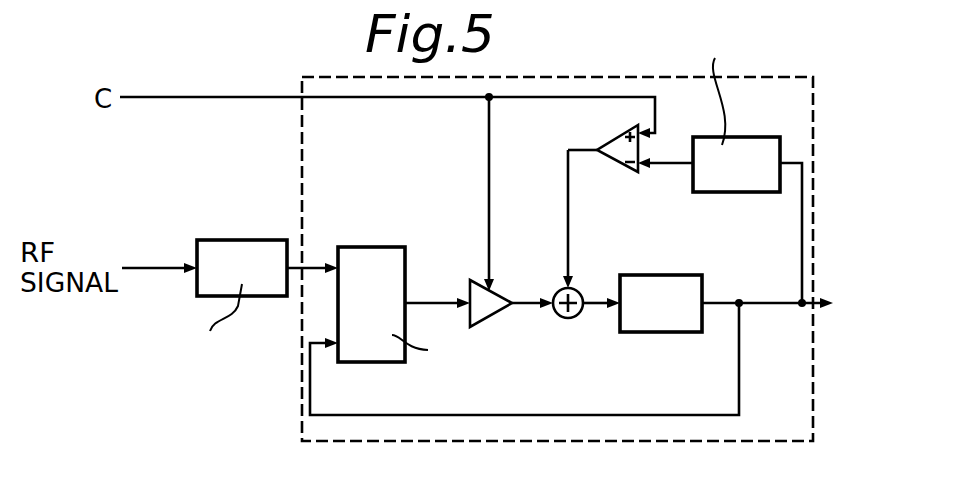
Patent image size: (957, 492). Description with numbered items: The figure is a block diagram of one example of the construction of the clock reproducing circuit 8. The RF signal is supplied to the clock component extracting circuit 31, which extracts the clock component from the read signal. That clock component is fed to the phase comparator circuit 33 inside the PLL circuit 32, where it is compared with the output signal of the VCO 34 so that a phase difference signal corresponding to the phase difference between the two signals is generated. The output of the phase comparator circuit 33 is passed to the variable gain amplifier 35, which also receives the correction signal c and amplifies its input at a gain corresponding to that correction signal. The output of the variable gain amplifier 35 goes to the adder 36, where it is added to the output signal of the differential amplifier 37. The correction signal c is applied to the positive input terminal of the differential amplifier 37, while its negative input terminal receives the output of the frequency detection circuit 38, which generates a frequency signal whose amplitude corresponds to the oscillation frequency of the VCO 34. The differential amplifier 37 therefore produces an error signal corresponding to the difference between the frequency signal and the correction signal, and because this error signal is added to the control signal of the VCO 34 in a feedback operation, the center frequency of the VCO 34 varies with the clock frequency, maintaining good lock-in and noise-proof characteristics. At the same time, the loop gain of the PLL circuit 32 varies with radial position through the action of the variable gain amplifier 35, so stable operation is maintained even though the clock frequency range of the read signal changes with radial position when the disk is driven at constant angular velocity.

The clock reproducing circuit 8 is at (690, 486).
The clock component extracting circuit 31 is at (247, 240).
The PLL circuit 32 is at (300, 118).
The phase comparator circuit 33 is at (372, 247).
The VCO 34 is at (661, 275).
The variable gain amplifier 35 is at (494, 288).
The adder 36 is at (578, 292).
The differential amplifier 37 is at (612, 160).
The frequency detection circuit 38 is at (745, 192).